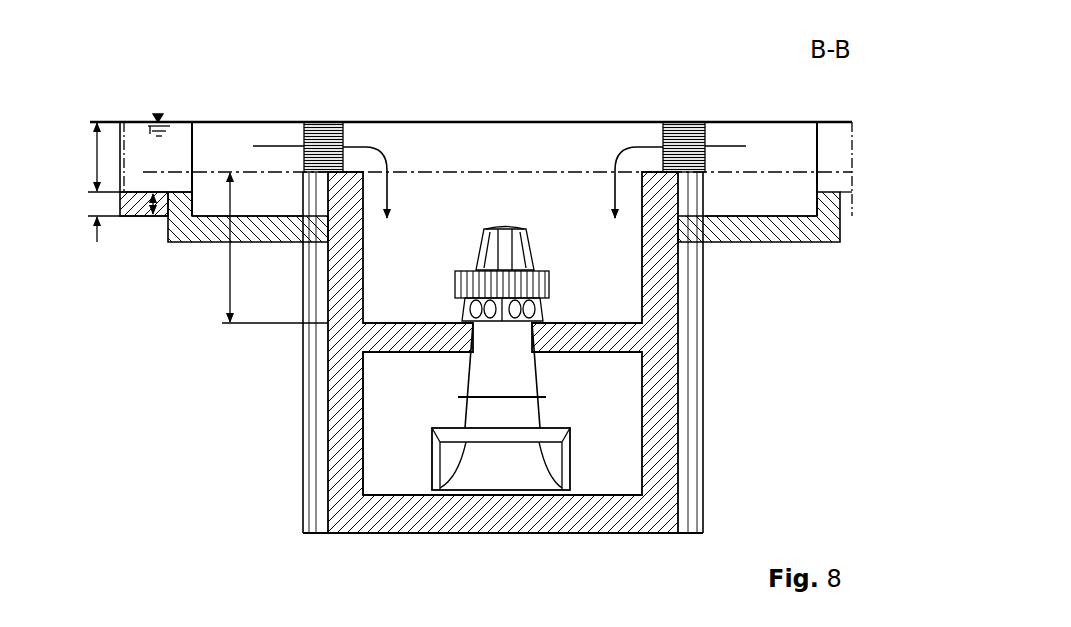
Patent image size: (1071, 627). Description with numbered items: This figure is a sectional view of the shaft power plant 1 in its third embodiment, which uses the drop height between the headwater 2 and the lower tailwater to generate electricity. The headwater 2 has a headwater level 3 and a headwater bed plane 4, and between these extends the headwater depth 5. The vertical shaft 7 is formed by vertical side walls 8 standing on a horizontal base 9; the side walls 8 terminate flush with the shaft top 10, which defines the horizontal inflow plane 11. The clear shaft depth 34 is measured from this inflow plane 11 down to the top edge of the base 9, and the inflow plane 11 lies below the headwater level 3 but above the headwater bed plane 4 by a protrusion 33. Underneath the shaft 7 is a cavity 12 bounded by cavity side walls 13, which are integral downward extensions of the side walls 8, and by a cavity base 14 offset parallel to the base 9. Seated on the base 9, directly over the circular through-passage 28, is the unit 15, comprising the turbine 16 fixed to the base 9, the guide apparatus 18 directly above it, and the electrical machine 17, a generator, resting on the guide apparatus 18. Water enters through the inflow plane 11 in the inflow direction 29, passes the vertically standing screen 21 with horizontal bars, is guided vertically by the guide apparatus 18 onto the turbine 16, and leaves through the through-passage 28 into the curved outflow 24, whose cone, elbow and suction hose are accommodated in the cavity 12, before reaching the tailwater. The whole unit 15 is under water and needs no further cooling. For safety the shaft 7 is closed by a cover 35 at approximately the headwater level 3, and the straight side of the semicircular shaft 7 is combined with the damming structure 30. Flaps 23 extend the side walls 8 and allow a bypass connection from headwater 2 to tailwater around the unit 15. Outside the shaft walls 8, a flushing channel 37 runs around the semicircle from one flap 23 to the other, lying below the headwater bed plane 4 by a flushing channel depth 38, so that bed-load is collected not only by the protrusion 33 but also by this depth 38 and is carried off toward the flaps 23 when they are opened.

The shaft power plant 1 is at (602, 102).
The headwater 2 is at (182, 134).
The headwater level 3 is at (168, 121).
The headwater bed plane 4 is at (122, 121).
The headwater depth 5 is at (96, 158).
The vertical shaft 7 is at (722, 318).
The vertical side walls 8 is at (668, 300).
The base 9 is at (393, 353).
The shaft top 10 is at (354, 172).
The horizontal inflow plane 11 is at (403, 168).
The cavity 12 is at (382, 436).
The cavity side walls 13 is at (340, 470).
The cavity base 14 is at (506, 518).
The unit 15 is at (504, 275).
The turbine 16 is at (541, 312).
The electrical machine 17 is at (531, 257).
The guide apparatus 18 is at (549, 284).
The screen 21 is at (322, 132).
The flap 23 is at (234, 137).
The outflow 24 is at (556, 410).
The through-passage 28 is at (474, 334).
The inflow direction 29 is at (277, 141).
The damming structure 30 is at (837, 135).
The protrusion 33 is at (153, 163).
The clear shaft depth 34 is at (227, 265).
The cover 35 is at (485, 121).
The flushing channel 37 is at (284, 235).
The flushing channel depth 38 is at (96, 208).